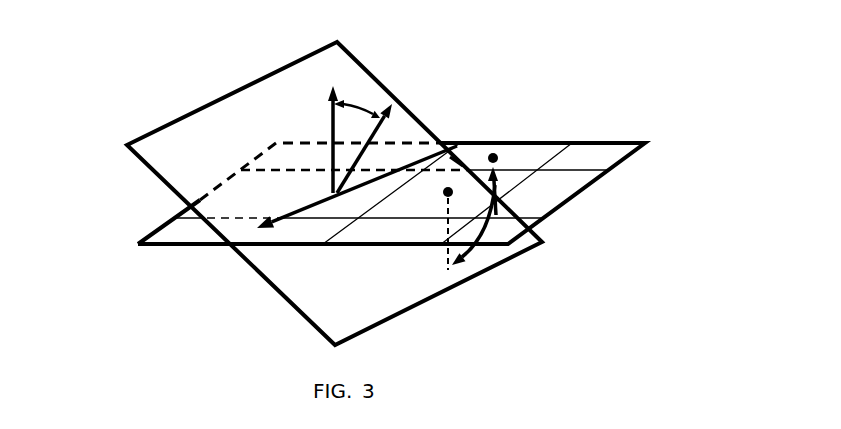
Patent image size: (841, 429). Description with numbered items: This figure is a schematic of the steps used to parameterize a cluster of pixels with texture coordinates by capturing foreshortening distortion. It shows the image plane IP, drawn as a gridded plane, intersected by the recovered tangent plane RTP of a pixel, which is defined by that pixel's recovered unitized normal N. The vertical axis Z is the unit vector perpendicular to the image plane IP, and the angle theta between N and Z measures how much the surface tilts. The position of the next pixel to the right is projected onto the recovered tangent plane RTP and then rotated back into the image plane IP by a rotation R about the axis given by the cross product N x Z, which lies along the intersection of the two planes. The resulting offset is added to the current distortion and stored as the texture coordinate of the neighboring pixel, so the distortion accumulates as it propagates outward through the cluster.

The recovered tangent plane RTP is at (153, 168).
The image plane IP is at (557, 205).
The Z axis vector Z is at (332, 129).
The recovered normal N is at (368, 148).
The axis of rotation N x Z is at (290, 214).
The rotation R is at (419, 175).